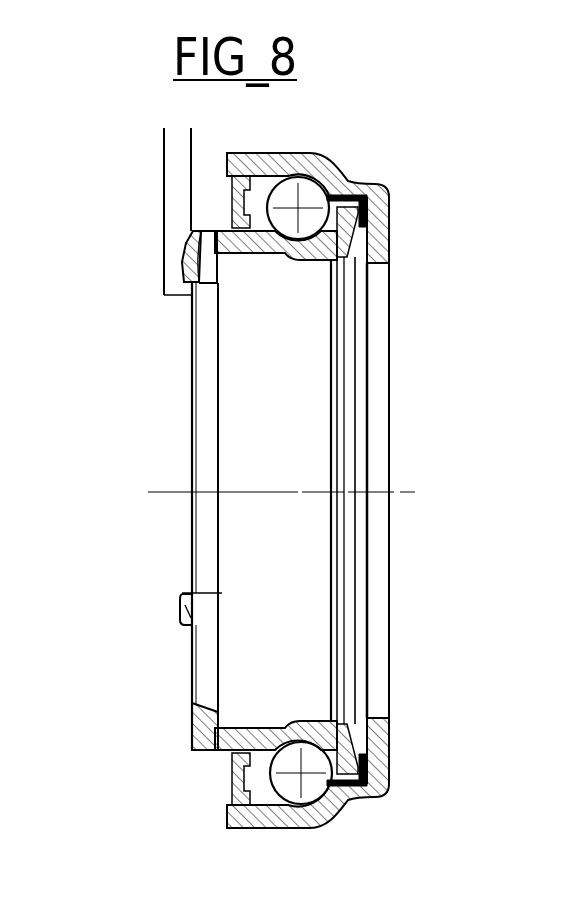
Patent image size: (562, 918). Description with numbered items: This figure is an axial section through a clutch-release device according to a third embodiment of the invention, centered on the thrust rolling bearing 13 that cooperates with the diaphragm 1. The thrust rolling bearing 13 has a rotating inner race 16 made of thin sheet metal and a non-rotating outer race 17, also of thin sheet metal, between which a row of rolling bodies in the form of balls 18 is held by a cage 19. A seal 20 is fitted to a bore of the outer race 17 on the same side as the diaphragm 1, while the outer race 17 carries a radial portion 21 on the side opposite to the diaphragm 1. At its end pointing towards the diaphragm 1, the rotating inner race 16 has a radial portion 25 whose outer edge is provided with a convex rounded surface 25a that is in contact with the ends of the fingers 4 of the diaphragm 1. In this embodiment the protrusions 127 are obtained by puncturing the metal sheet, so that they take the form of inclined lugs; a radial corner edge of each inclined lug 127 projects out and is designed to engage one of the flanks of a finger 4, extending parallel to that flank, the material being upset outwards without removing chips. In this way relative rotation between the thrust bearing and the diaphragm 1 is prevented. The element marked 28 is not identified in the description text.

The diaphragm 1 is at (158, 156).
The fingers 4 is at (164, 284).
The thrust rolling bearing 13 is at (322, 148).
The rotating inner race 16 is at (311, 256).
The non-rotating outer race 17 is at (337, 163).
The balls 18 is at (318, 204).
The cage 19 is at (368, 223).
The seal 20 is at (232, 176).
The radial portion 21 is at (380, 247).
The radial portion 25 is at (205, 346).
The convex rounded surface 25a is at (192, 374).
The shoulder 28 is at (208, 228).
The protrusions 127 is at (183, 262).